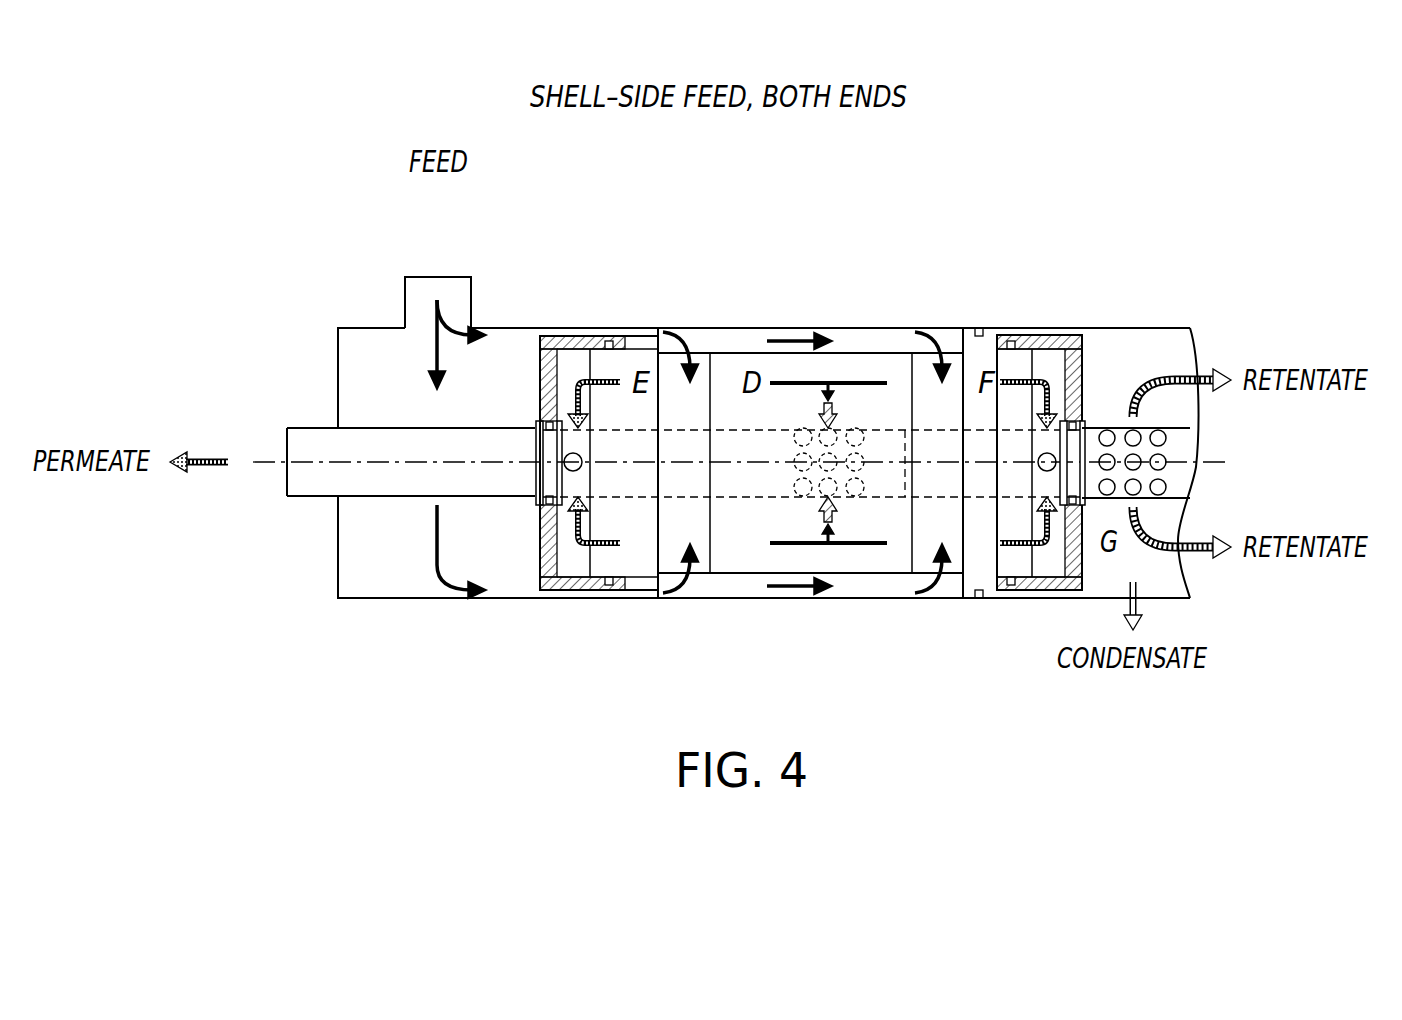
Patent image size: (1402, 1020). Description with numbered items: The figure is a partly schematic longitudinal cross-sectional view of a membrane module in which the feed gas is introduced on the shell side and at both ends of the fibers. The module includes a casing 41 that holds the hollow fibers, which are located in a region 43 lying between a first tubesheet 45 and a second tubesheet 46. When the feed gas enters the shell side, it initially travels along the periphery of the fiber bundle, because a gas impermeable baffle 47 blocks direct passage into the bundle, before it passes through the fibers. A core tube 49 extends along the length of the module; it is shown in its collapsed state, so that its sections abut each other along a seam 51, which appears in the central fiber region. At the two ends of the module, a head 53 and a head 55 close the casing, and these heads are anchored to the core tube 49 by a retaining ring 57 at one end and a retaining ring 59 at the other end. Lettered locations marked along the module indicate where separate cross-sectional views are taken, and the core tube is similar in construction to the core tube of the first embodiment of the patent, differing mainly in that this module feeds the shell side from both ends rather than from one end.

The casing 41 is at (338, 548).
The region 43 is at (722, 402).
The tubesheet 45 is at (645, 336).
The tubesheet 46 is at (997, 335).
The gas impermeable baffle 47 is at (867, 353).
The core tube 49 is at (287, 428).
The seam 51 is at (905, 497).
The head 53 is at (587, 337).
The head 55 is at (1082, 340).
The retaining ring 57 is at (535, 462).
The retaining ring 59 is at (1090, 430).